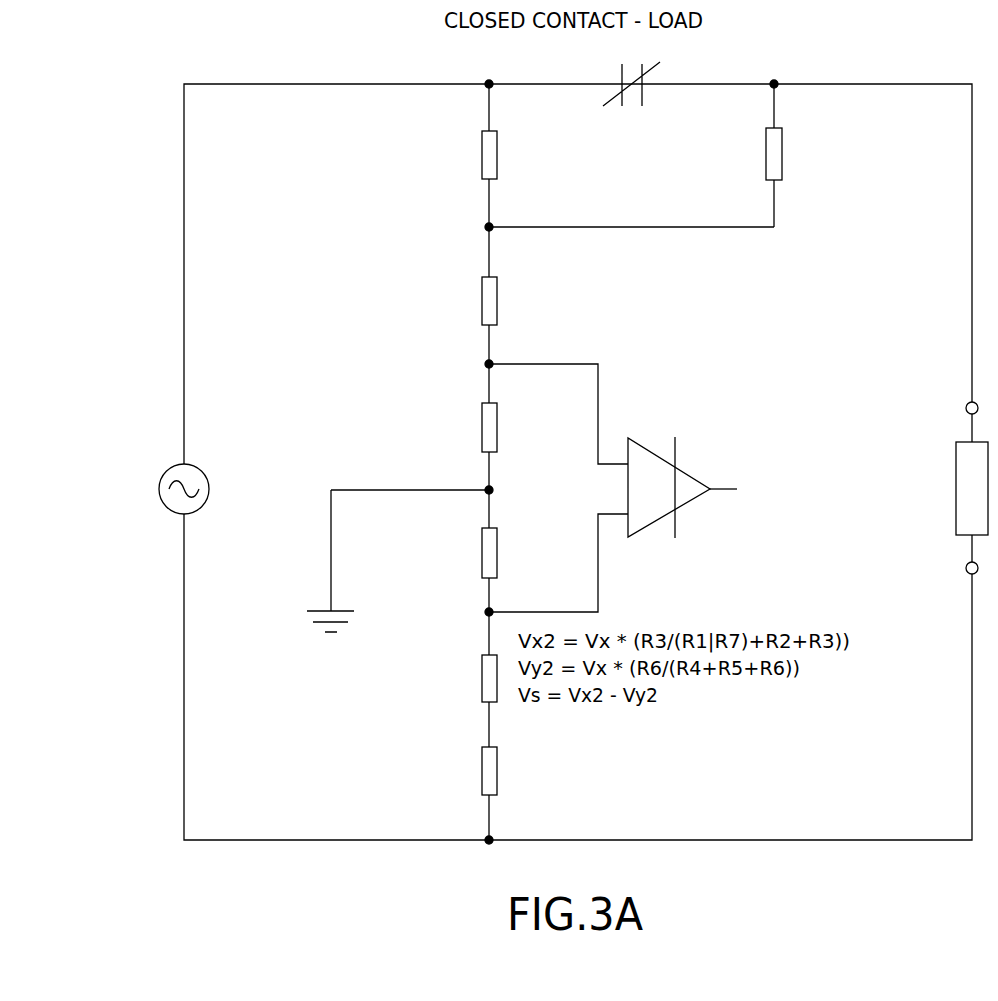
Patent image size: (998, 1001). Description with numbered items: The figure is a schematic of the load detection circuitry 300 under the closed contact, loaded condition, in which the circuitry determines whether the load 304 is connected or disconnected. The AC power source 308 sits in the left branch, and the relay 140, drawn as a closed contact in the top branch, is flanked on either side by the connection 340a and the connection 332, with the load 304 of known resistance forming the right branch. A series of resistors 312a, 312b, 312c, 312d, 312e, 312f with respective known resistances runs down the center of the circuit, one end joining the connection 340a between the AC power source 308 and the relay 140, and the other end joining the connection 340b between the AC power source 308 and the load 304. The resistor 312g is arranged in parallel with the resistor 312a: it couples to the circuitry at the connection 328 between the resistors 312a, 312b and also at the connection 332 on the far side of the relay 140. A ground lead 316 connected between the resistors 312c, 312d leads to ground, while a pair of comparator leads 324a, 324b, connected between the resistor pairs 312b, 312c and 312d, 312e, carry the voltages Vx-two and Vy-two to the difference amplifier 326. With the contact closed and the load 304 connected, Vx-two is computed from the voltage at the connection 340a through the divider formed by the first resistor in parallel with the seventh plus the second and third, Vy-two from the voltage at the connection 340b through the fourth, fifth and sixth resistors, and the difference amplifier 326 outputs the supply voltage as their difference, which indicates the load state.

The load detection circuitry 300 is at (138, 51).
The connection 340a is at (445, 74).
The relay 140 is at (631, 86).
The connection 332 is at (774, 72).
The resistor 312g is at (732, 155).
The resistor 312a is at (447, 155).
The connection 328 is at (588, 228).
The resistor 312b is at (447, 301).
The comparator lead 324a is at (510, 409).
The resistor 312c is at (447, 427).
The difference amplifier 326 is at (695, 480).
The ground lead 316 is at (418, 555).
The resistor 312d is at (447, 553).
The comparator lead 324b is at (510, 569).
The resistor 312e is at (447, 678).
The resistor 312f is at (448, 771).
The connection 340b is at (446, 853).
The AC power source 308 is at (147, 489).
The load 304 is at (936, 488).